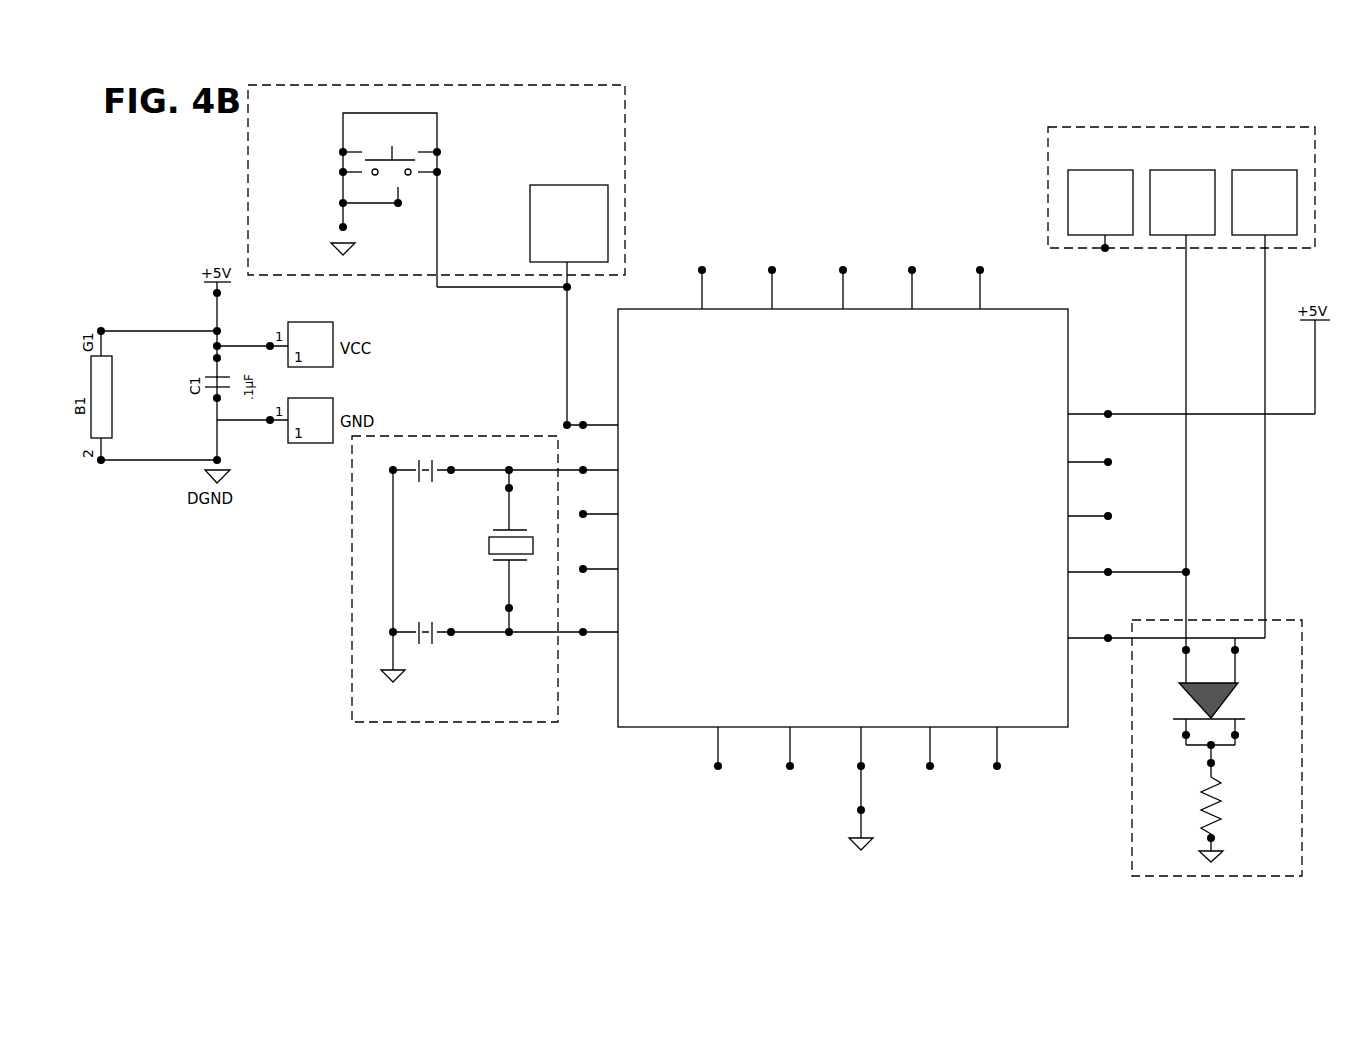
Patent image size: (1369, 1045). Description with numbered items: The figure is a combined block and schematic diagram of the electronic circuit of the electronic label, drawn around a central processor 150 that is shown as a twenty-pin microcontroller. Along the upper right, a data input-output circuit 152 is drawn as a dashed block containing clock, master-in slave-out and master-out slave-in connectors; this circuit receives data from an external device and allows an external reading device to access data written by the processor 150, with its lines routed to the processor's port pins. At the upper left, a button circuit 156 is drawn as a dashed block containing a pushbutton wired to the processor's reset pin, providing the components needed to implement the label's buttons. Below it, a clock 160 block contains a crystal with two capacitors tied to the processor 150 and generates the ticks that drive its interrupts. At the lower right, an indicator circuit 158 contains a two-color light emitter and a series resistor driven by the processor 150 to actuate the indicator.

The processor 150 is at (620, 684).
The data input-output circuit 152 is at (1228, 140).
The button circuit 156 is at (597, 132).
The indicator circuit 158 is at (1270, 752).
The clock 160 is at (367, 627).